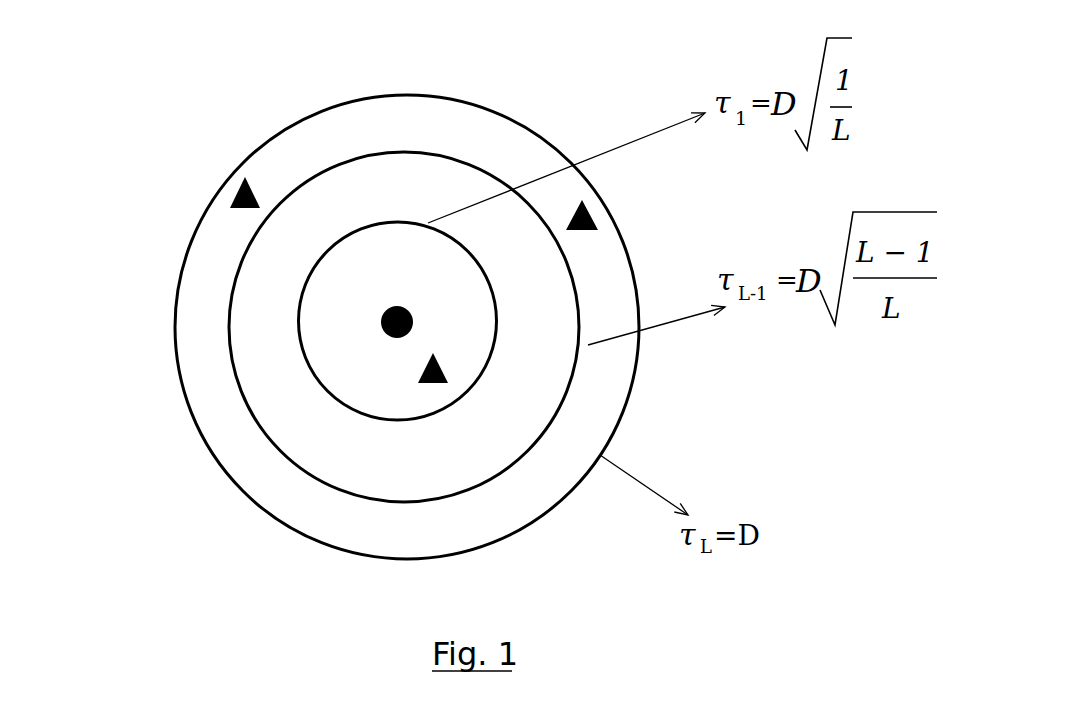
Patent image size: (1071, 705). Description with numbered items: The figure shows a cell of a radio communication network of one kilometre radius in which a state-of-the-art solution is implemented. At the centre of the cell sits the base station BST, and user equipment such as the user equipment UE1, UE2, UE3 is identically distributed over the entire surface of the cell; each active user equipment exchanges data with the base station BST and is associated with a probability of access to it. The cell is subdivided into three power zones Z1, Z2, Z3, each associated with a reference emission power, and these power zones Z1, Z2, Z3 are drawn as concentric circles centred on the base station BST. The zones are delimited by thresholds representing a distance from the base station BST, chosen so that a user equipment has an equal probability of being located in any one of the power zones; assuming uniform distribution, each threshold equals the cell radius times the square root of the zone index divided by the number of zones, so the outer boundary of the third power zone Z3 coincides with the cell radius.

The first power zone Z1 is at (373, 367).
The second power zone Z2 is at (303, 403).
The third power zone Z3 is at (432, 115).
The base station BST is at (397, 322).
The first user equipment UE1 is at (436, 393).
The second user equipment UE2 is at (248, 218).
The third user equipment UE3 is at (594, 242).